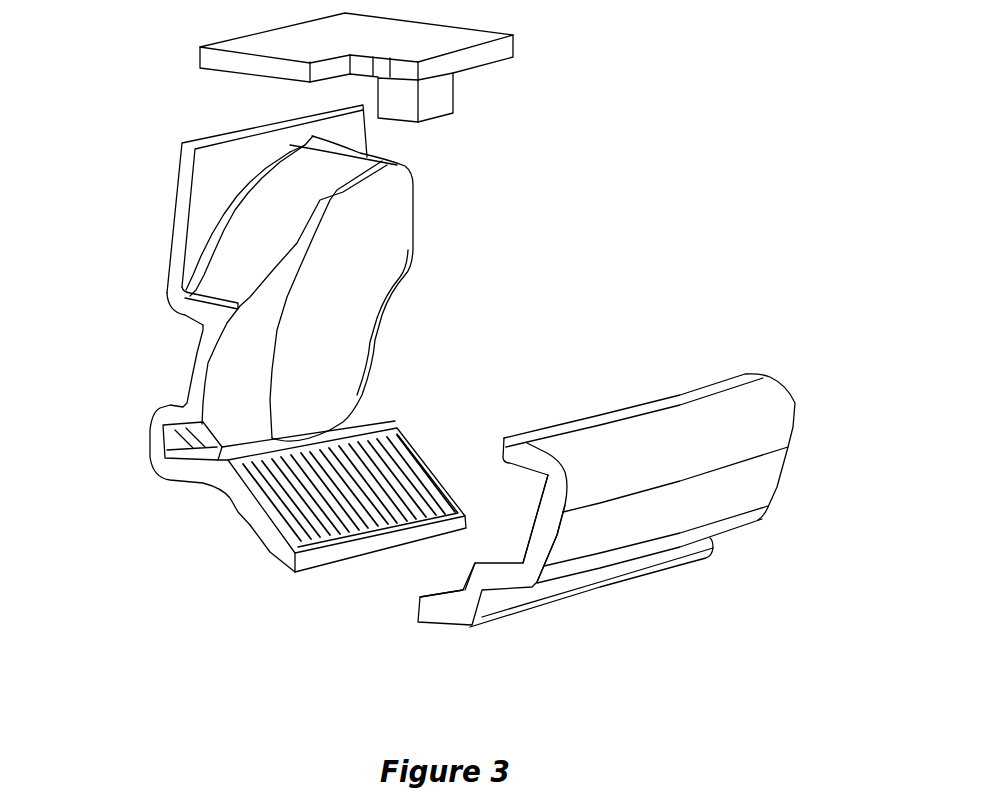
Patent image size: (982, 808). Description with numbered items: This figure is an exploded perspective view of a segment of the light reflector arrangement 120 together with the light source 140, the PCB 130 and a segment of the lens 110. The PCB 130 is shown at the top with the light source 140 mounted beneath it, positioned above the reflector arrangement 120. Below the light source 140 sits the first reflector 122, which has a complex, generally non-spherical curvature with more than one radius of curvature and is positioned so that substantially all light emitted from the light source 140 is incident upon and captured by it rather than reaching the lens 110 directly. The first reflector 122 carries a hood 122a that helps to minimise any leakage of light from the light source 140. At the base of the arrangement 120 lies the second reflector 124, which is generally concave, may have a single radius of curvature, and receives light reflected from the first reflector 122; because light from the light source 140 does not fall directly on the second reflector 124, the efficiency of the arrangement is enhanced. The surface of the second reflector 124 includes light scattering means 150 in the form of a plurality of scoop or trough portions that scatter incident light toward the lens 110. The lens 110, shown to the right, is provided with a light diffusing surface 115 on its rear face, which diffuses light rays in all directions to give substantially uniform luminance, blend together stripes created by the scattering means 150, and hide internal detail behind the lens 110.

The lens 110 is at (713, 503).
The light diffusing surface 115 is at (533, 520).
The light reflector arrangement 120 is at (158, 343).
The first reflector 122 is at (383, 222).
The hood 122a is at (263, 222).
The second reflector 124 is at (283, 507).
The PCB 130 is at (290, 37).
The light source 140 is at (437, 95).
The light scattering means 150 is at (423, 467).